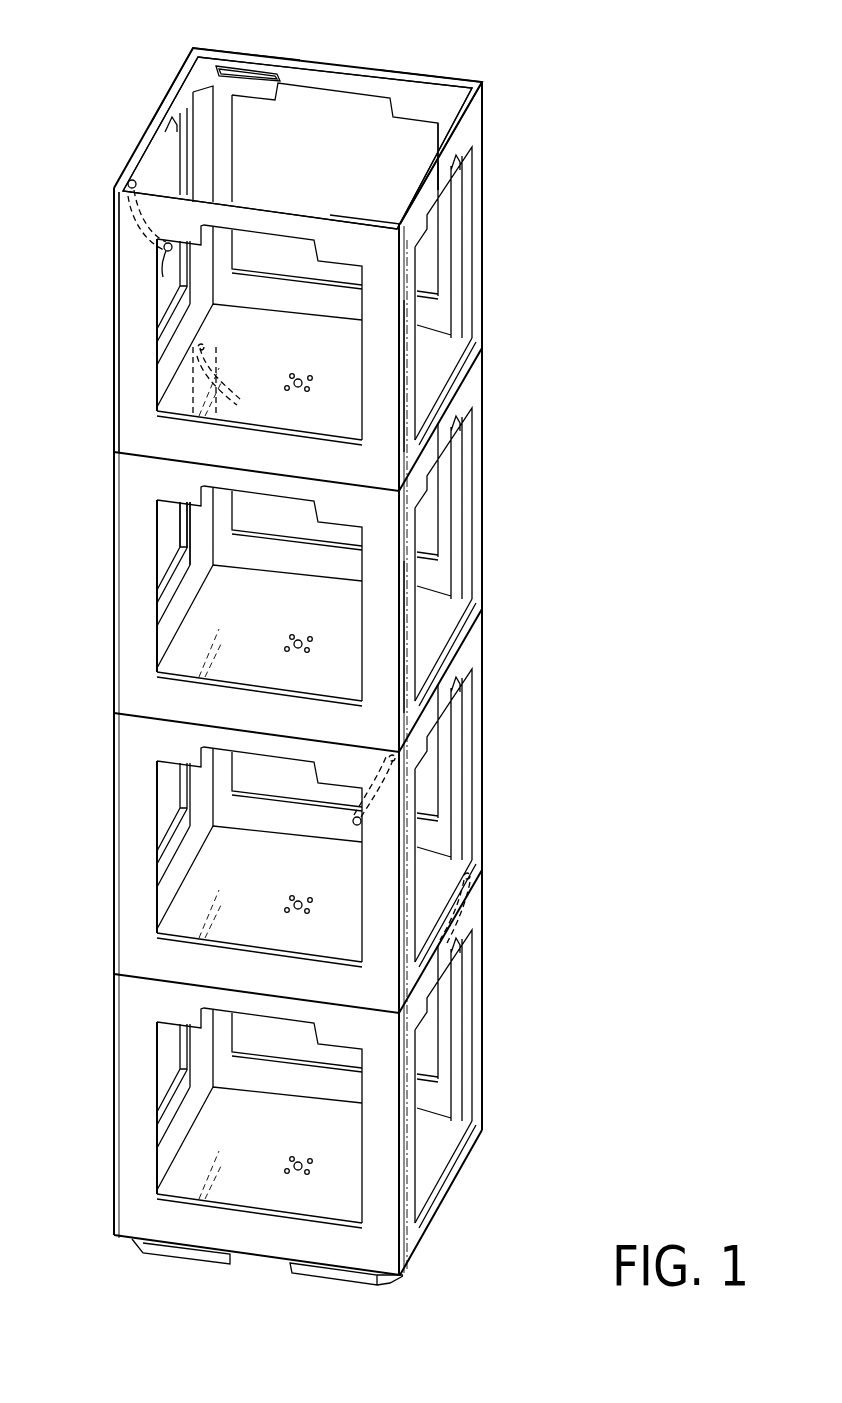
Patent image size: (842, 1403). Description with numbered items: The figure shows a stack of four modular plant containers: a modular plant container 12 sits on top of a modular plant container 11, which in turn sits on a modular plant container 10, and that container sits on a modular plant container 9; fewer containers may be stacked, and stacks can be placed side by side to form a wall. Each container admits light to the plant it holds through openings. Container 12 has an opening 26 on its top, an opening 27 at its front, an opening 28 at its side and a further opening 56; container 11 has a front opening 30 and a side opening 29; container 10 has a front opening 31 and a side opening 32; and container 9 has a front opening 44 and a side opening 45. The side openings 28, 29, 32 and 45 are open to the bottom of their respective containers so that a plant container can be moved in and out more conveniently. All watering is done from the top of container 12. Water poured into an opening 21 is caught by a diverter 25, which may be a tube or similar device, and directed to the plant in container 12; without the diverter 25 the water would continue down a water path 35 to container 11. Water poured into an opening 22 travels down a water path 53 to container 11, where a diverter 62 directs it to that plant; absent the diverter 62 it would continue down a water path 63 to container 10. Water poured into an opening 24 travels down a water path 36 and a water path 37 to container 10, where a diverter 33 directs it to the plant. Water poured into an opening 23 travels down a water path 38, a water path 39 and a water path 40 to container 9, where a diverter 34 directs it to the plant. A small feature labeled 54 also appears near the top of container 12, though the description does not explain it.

The modular plant container 9 is at (508, 1055).
The modular plant container 10 is at (508, 795).
The modular plant container 11 is at (508, 533).
The modular plant container 12 is at (508, 271).
The opening 21 is at (132, 168).
The opening 22 is at (201, 68).
The opening 23 is at (472, 78).
The opening 24 is at (396, 206).
The diverter 25 is at (165, 268).
The opening 26 is at (317, 110).
The opening 27 is at (171, 383).
The opening 28 is at (449, 344).
The opening 29 is at (449, 605).
The opening 30 is at (171, 644).
The opening 31 is at (171, 905).
The opening 32 is at (449, 866).
The diverter 33 is at (355, 827).
The diverter 34 is at (470, 926).
The water path 35 is at (115, 344).
The water path 36 is at (402, 386).
The water path 37 is at (402, 579).
The water path 38 is at (484, 208).
The water path 39 is at (484, 469).
The water path 40 is at (484, 731).
The opening 44 is at (171, 1166).
The opening 45 is at (449, 1127).
The water path 53 is at (205, 153).
The notch 54 is at (181, 192).
The opening 56 is at (379, 147).
The diverter 62 is at (227, 378).
The water path 63 is at (200, 538).